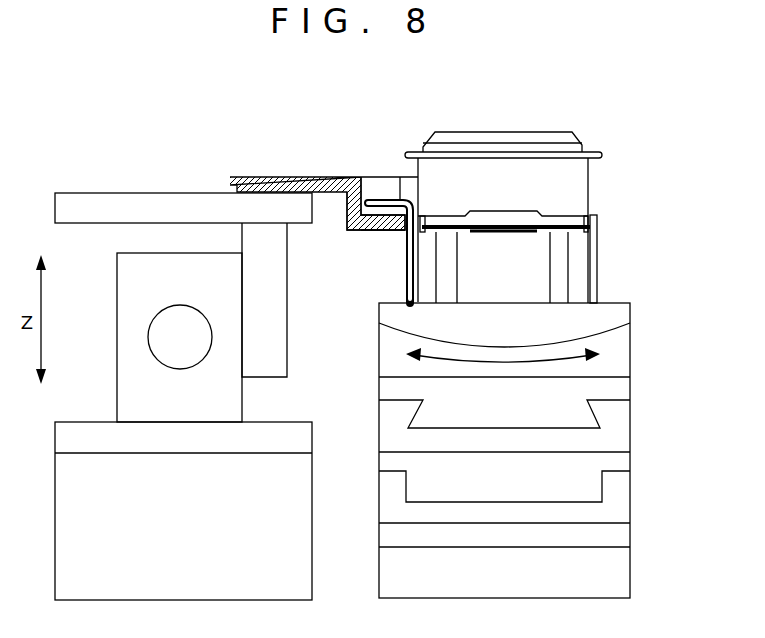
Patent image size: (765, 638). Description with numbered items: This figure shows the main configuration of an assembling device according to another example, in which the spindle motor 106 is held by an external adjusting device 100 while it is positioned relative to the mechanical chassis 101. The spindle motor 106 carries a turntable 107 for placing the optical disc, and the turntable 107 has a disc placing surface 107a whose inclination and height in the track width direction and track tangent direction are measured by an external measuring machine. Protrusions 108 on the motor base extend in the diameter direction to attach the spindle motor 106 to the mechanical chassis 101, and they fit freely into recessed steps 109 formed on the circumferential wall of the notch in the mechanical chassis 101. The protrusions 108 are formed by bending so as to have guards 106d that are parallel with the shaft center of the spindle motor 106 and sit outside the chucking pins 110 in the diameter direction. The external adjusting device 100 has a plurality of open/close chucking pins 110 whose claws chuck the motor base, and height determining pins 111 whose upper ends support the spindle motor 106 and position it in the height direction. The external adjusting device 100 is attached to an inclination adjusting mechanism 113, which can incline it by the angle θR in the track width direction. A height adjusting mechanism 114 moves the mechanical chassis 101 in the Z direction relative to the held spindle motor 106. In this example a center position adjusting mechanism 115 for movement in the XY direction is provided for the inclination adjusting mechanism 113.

The external adjusting device 100 is at (516, 346).
The mechanical chassis 101 is at (255, 183).
The spindle motor 106 is at (522, 130).
The guard 106d is at (395, 224).
The turntable 107 is at (588, 158).
The disc placing surface 107a is at (600, 155).
The protrusion 108 is at (390, 200).
The recessed step 109 is at (372, 185).
The chucking pin 110 is at (409, 283).
The height determining pin 111 is at (447, 283).
The inclination adjusting mechanism 113 is at (543, 405).
The height adjusting mechanism 114 is at (169, 290).
The center position adjusting mechanism 115 is at (547, 512).